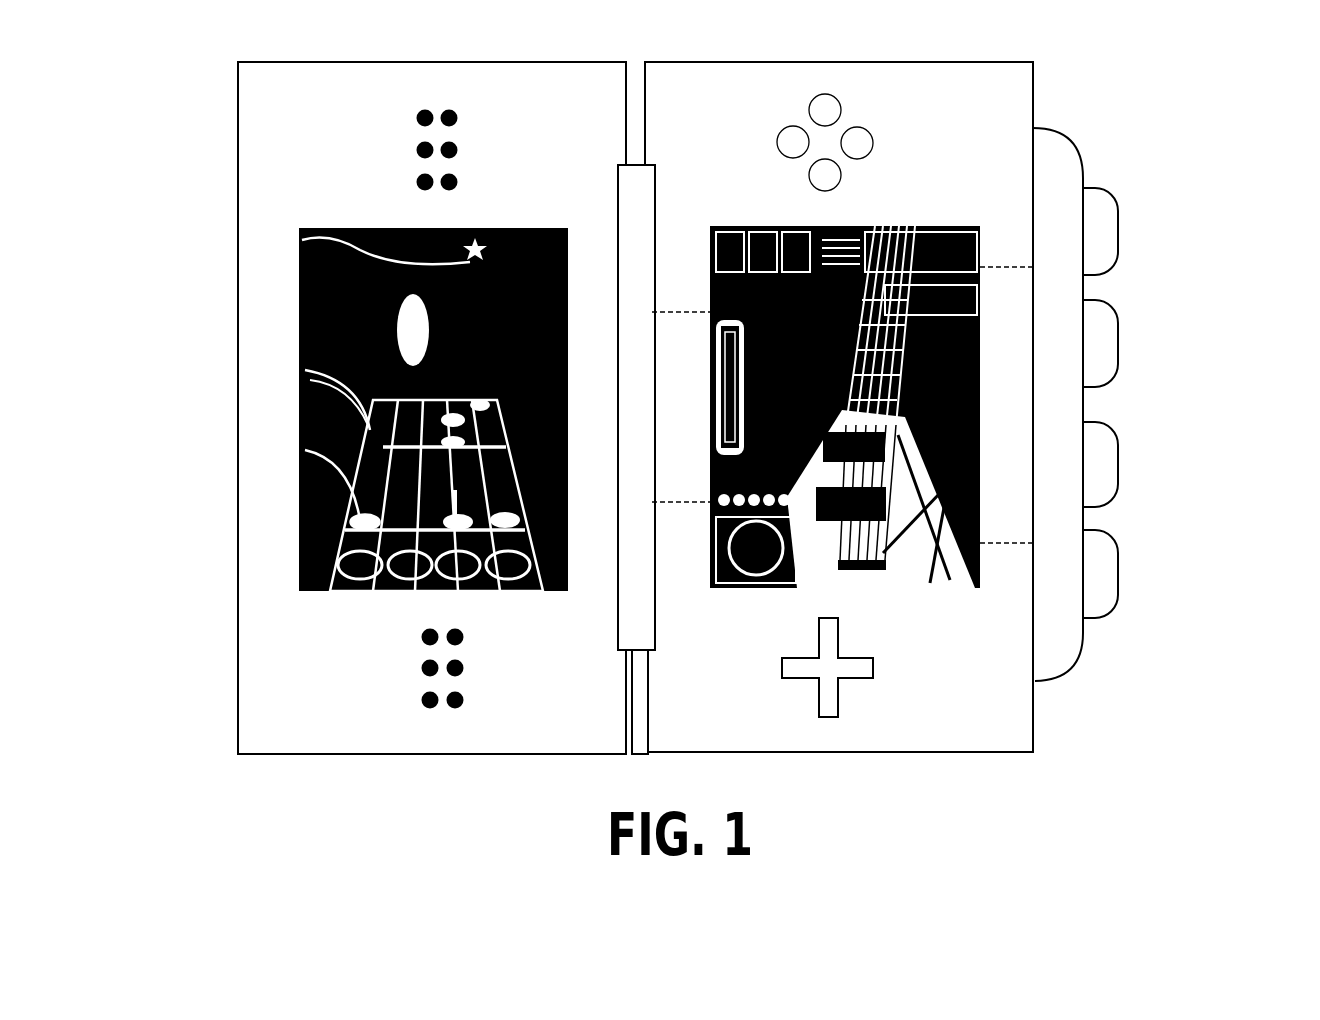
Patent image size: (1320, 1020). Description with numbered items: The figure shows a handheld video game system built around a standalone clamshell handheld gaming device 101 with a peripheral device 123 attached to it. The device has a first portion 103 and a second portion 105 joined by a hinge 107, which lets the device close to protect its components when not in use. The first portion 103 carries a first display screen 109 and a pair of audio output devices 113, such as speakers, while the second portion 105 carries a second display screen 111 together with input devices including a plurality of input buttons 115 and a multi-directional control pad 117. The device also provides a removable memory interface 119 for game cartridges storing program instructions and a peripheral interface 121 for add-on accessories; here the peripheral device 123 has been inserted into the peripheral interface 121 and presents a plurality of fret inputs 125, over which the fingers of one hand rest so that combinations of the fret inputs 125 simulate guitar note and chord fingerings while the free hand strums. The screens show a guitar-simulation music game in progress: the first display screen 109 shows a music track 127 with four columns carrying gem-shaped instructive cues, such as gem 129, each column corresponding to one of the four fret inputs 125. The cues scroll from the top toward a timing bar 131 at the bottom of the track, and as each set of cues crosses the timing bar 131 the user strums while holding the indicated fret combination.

The handheld gaming device 101 is at (272, 822).
The first portion 103 is at (337, 63).
The second portion 105 is at (743, 61).
The hinge 107 is at (652, 200).
The first display screen 109 is at (343, 591).
The second display screen 111 is at (933, 224).
The audio output devices 113 is at (460, 148).
The input buttons 115 is at (920, 108).
The multi-directional control pad 117 is at (850, 657).
The removable memory interface 119 is at (680, 502).
The peripheral interface 121 is at (1013, 543).
The peripheral device 123 is at (1070, 665).
The fret inputs 125 is at (1118, 232).
The music track 127 is at (365, 420).
The gem 129 is at (350, 530).
The timing bar 131 is at (507, 577).